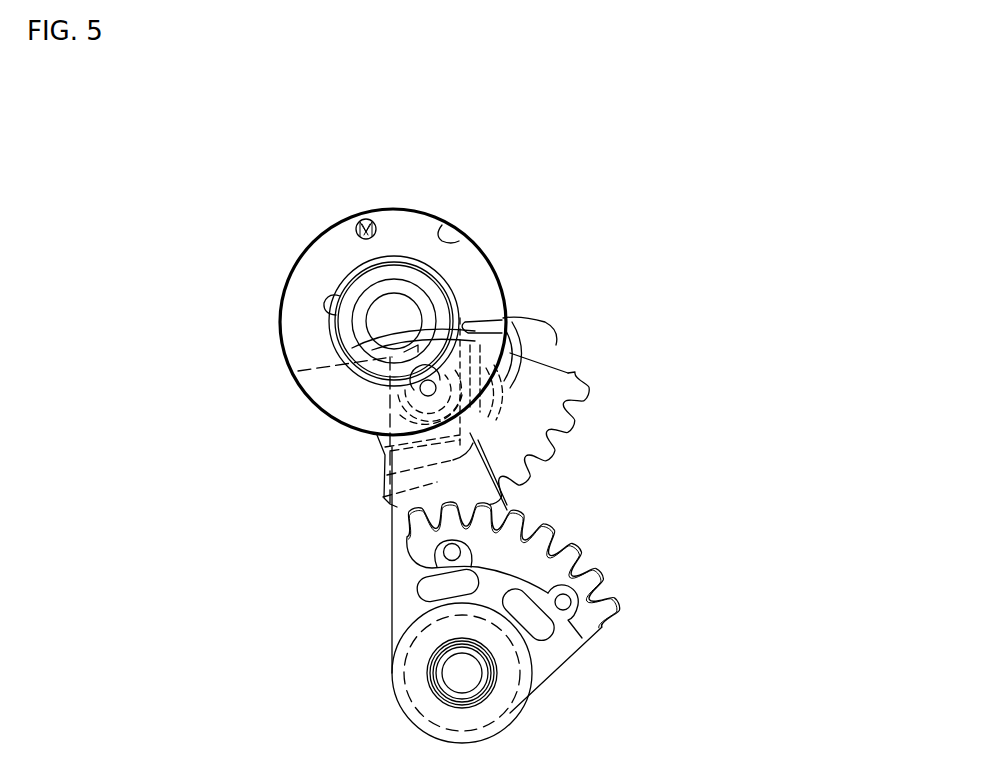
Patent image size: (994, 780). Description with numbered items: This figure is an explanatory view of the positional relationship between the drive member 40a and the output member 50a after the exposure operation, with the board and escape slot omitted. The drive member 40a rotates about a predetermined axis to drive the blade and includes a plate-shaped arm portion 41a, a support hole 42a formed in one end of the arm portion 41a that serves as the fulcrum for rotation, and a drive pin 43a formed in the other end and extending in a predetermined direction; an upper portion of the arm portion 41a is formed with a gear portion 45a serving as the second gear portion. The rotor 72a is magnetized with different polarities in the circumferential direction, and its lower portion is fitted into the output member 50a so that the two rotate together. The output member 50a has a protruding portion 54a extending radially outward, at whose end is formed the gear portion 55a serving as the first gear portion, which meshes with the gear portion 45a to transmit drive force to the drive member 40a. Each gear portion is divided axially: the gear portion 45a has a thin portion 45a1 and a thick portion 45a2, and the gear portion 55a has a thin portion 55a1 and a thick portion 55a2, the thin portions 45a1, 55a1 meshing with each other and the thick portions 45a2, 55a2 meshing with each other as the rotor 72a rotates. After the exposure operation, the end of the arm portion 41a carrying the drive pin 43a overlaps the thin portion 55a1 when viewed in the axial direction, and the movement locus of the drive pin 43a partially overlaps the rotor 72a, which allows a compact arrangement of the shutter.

The rotor 72a is at (401, 254).
The drive pin 43a is at (478, 340).
The arm portion 41a is at (385, 503).
The protruding portion 54a is at (547, 382).
The output member 50a is at (537, 357).
The gear portion 55a is at (647, 438).
The thin portion 55a1 is at (505, 496).
The thick portion 55a2 is at (550, 442).
The gear portion 45a is at (601, 560).
The thin portion 45a1 is at (490, 500).
The thick portion 45a2 is at (573, 583).
The drive member 40a is at (557, 669).
The support hole 42a is at (468, 672).